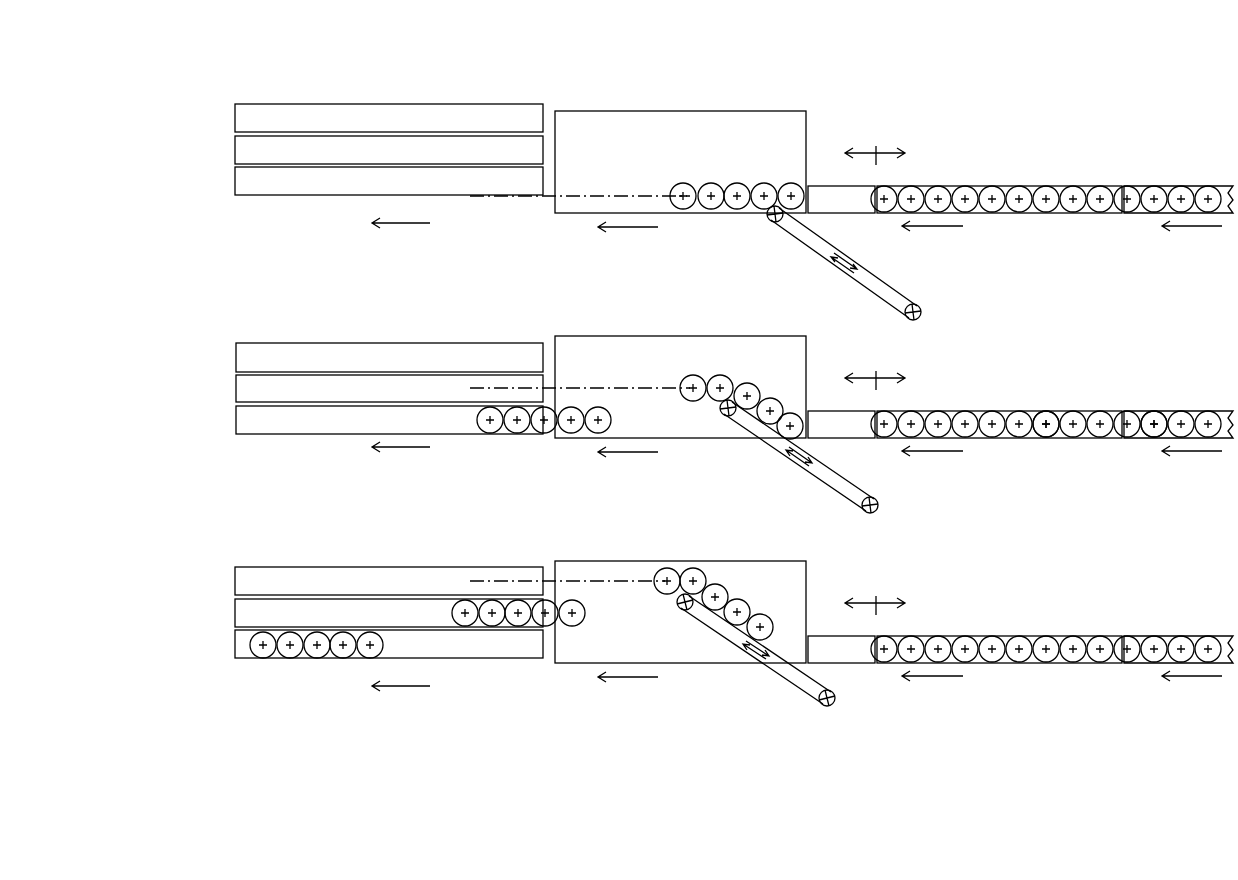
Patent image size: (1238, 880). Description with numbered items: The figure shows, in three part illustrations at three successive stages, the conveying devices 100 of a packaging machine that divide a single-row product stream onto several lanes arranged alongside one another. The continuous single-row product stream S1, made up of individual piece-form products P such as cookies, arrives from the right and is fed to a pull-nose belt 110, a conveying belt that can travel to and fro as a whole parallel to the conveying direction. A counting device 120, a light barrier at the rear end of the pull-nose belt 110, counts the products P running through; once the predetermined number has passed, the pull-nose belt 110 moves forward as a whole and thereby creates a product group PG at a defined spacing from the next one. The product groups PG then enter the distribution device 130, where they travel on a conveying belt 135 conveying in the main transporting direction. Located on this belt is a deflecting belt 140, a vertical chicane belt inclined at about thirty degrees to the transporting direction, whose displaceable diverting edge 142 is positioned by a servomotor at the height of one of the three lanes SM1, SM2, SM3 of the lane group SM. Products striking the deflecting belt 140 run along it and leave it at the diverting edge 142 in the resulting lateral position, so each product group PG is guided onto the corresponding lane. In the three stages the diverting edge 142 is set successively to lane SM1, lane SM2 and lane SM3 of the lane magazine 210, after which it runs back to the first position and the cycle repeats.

The conveying devices 100 is at (758, 704).
The pull-nose belt 110 is at (950, 188).
The counting device 120 is at (1123, 200).
The distribution device 130 is at (804, 98).
The conveying belt 135 is at (602, 128).
The deflecting belt 140 is at (900, 298).
The diverting edge 142 is at (772, 220).
The stack magazine 210 is at (304, 136).
The lanes SM is at (285, 165).
The first lane SM1 is at (250, 420).
The second lane SM2 is at (250, 392).
The third lane SM3 is at (250, 360).
The product group PG is at (530, 428).
The piece-form product P is at (1043, 432).
The product stream S1 is at (1155, 418).